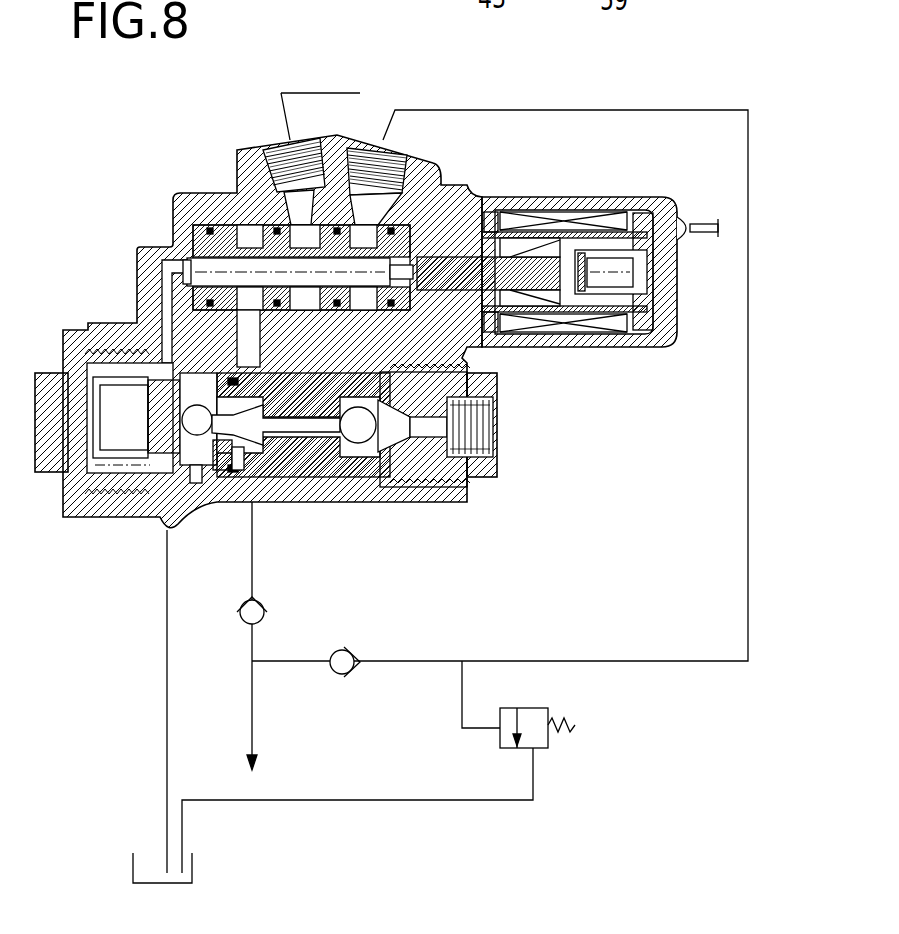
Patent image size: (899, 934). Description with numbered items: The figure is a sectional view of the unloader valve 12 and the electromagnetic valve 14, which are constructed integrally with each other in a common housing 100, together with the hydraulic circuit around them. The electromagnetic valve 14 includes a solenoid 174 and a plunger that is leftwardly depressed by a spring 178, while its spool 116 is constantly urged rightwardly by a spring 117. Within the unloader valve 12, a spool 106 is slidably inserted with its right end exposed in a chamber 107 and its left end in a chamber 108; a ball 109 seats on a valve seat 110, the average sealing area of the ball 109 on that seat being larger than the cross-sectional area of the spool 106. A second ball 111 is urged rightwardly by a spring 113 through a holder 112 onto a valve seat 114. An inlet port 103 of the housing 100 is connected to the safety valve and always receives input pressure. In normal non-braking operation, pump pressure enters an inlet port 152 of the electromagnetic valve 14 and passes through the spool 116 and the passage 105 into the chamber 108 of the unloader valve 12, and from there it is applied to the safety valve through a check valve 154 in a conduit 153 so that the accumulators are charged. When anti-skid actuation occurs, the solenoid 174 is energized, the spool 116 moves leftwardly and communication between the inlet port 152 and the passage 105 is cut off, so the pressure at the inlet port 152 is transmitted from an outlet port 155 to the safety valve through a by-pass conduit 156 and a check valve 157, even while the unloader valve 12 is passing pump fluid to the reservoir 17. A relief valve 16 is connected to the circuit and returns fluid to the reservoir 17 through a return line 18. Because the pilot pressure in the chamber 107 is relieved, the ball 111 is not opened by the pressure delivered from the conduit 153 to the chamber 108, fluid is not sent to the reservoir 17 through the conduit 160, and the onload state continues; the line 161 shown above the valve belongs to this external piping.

The unloader valve 12 is at (495, 490).
The electromagnetic valve 14 is at (523, 157).
The relief valve 16 is at (540, 745).
The reservoir 17 is at (192, 870).
The return line 18 is at (371, 800).
The housing 100 is at (443, 497).
The inlet port 103 is at (478, 430).
The passage 105 is at (255, 353).
The spool 106 is at (320, 423).
The chamber 107 is at (388, 453).
The chamber 108 is at (230, 452).
The ball 109 is at (362, 432).
The valve seat 110 is at (330, 440).
The ball 111 is at (194, 408).
The holder 112 is at (155, 398).
The spring 113 is at (88, 465).
The valve seat 114 is at (197, 473).
The spool 116 is at (210, 227).
The spring 117 is at (180, 263).
The inlet port 152 is at (287, 153).
The conduit 153 is at (252, 573).
The check valve 154 is at (262, 619).
The outlet port 155 is at (393, 160).
The by-pass conduit 156 is at (563, 110).
The check valve 157 is at (340, 675).
The conduit 160 is at (167, 645).
The line 161 is at (323, 93).
The solenoid 174 is at (602, 222).
The spring 178 is at (672, 287).